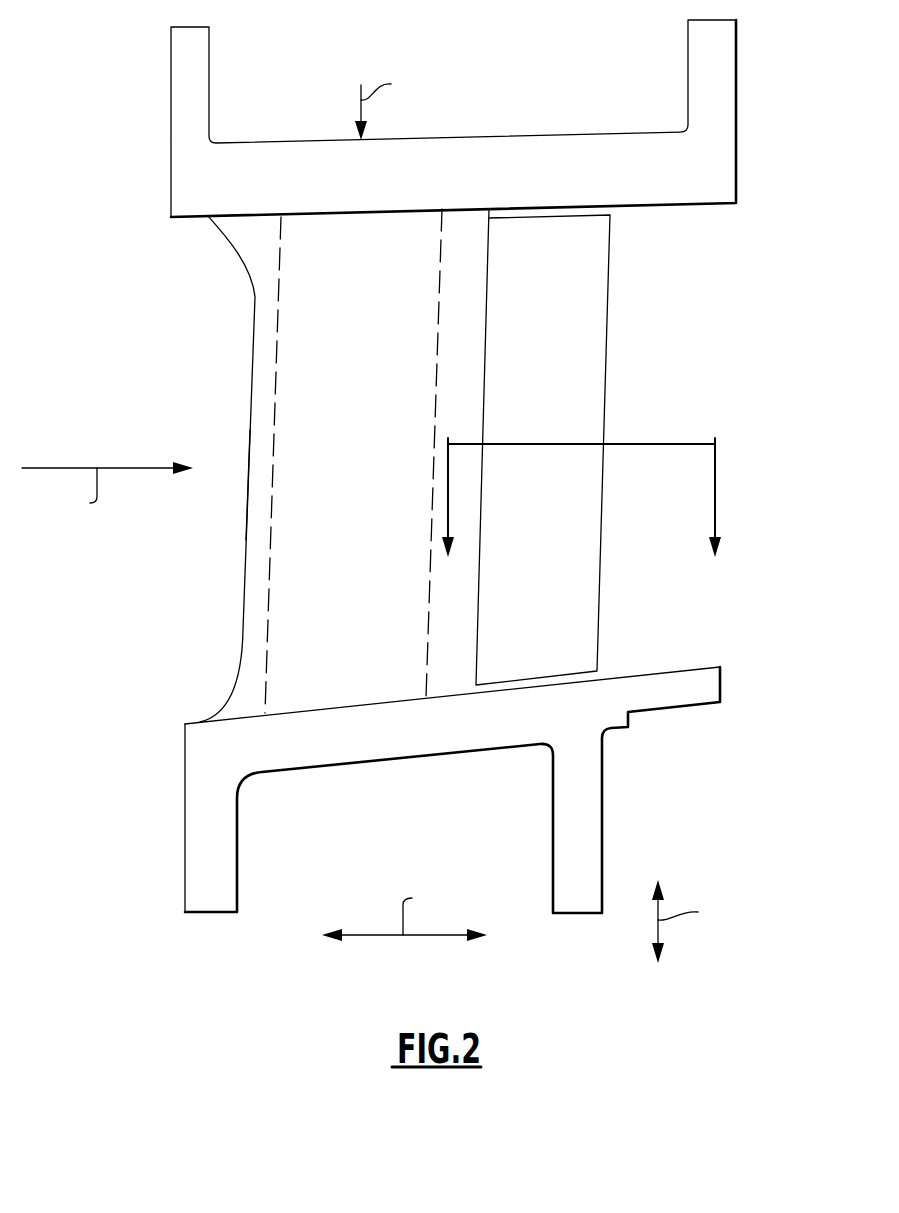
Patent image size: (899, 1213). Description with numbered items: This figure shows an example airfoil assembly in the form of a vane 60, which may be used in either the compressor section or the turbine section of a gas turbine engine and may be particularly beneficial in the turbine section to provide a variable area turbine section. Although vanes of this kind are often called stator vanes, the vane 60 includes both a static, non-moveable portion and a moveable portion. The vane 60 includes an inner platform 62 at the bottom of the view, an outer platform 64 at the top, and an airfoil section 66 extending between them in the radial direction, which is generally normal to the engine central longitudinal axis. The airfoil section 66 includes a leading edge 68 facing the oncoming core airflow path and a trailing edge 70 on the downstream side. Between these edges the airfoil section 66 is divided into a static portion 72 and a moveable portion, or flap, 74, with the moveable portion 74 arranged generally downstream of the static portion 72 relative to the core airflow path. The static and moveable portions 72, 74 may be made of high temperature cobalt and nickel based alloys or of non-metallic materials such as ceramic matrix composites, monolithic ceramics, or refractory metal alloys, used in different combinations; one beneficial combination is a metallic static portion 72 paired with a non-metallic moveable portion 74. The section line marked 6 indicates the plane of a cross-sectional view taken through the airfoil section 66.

The vane 60 is at (795, 165).
The inner platform 62 is at (705, 687).
The outer platform 64 is at (712, 139).
The airfoil section 66 is at (240, 430).
The leading edge 68 is at (247, 537).
The trailing edge 70 is at (607, 378).
The static portion 72 is at (327, 347).
The moveable portion 74 is at (588, 312).
The section line 6- 6 is at (582, 515).